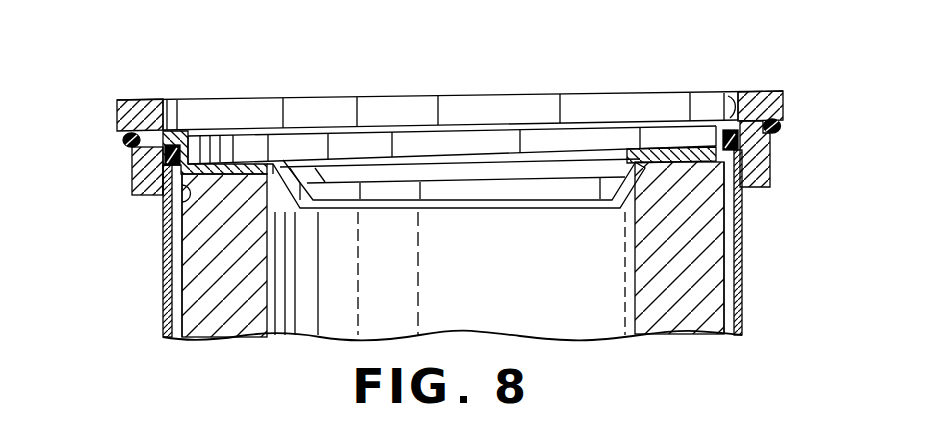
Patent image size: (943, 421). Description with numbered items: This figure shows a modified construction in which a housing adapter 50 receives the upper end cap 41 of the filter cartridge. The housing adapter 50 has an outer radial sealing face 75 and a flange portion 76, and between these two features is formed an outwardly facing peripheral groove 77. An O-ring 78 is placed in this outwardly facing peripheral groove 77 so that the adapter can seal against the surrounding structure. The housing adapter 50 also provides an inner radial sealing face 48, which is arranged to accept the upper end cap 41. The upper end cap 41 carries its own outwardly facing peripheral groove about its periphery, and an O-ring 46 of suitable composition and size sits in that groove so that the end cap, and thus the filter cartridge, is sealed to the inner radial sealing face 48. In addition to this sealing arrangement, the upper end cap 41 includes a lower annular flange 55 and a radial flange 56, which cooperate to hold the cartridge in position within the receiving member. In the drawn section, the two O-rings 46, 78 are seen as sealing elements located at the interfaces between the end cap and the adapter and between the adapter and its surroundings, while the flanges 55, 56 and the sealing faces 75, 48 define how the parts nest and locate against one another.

The upper end cap 41 is at (648, 152).
The O-ring 46 is at (766, 152).
The inner radial sealing face 48 is at (726, 115).
The housing adapter 50 is at (783, 165).
The lower annular flange 55 is at (164, 162).
The radial flange 56 is at (170, 214).
The outer radial sealing face 75 is at (132, 173).
The flange portion 76 is at (130, 134).
The outwardly facing peripheral groove 77 is at (148, 146).
The O-ring 78 is at (126, 146).